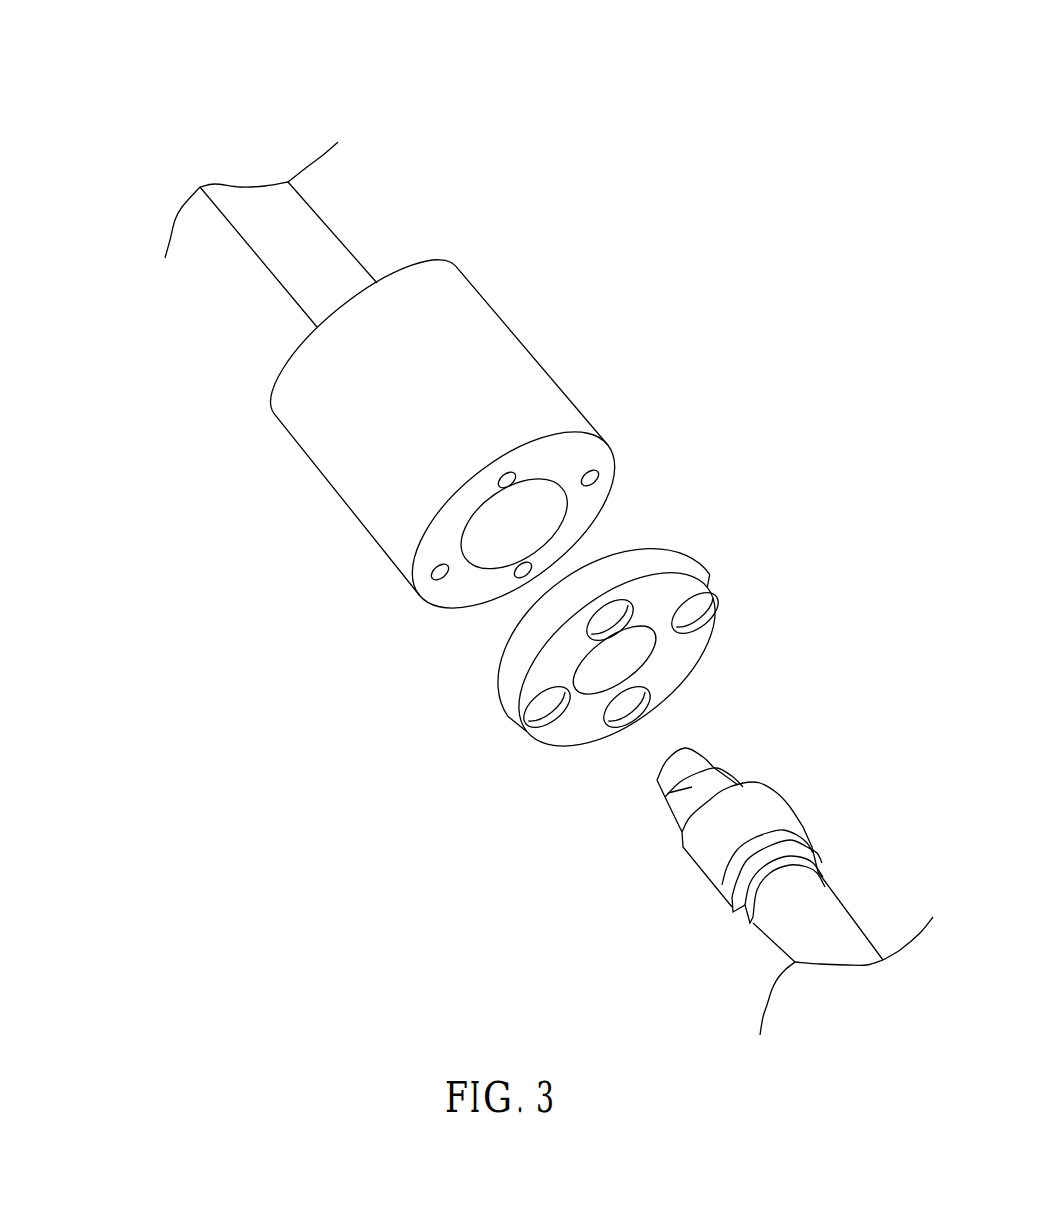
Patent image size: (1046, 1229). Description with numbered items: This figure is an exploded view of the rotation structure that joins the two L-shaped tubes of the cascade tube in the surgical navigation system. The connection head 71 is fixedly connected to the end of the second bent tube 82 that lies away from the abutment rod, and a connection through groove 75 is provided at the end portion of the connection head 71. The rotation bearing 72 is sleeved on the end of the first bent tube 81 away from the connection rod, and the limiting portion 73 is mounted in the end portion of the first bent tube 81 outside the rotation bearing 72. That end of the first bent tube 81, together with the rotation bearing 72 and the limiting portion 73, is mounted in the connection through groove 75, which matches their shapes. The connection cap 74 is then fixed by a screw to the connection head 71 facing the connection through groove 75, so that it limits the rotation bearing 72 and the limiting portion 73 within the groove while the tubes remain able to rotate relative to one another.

The connection head 71 is at (483, 403).
The rotation bearing 72 is at (740, 837).
The limiting portion 73 is at (667, 797).
The connection cap 74 is at (540, 697).
The connection through groove 75 is at (510, 520).
The first bent tube 81 is at (800, 927).
The second bent tube 82 is at (293, 248).